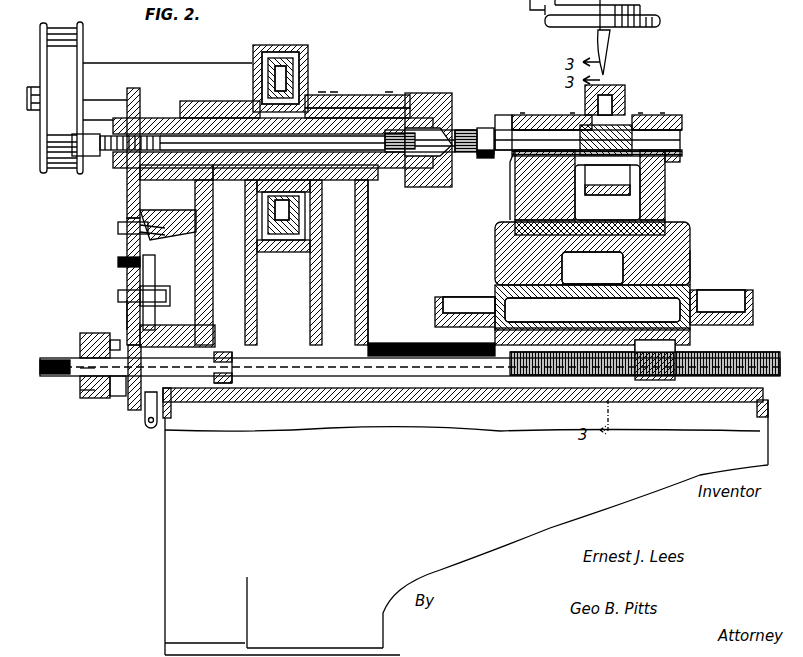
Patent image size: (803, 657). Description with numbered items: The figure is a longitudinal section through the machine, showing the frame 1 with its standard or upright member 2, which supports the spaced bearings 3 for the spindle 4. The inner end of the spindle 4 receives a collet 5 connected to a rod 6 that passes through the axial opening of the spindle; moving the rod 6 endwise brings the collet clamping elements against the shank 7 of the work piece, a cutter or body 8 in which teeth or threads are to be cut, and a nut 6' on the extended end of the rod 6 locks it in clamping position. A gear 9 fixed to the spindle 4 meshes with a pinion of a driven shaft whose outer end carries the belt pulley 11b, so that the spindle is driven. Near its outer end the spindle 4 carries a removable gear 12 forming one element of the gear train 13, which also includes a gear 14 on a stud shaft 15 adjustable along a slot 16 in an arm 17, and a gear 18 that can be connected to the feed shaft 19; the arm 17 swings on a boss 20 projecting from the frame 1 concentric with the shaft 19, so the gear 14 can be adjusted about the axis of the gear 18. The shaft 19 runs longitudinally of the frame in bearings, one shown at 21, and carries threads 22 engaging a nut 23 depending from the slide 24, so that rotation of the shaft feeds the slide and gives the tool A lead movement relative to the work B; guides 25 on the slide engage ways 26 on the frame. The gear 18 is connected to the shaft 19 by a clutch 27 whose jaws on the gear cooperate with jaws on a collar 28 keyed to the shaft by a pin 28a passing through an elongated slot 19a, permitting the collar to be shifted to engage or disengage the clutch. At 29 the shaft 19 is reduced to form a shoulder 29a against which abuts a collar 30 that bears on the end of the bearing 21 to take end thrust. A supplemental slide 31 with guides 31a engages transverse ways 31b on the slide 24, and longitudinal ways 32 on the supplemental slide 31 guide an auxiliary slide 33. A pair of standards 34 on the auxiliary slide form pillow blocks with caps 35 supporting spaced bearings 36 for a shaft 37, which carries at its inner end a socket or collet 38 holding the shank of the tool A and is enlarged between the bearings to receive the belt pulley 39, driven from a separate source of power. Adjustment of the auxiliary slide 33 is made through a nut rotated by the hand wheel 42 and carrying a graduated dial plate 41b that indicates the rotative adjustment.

The frame 1 is at (456, 398).
The standard or upright member 2 is at (368, 286).
The bearings 3 is at (343, 95).
The spindle 4 is at (326, 160).
The collet 5 is at (212, 101).
The rod 6 is at (259, 242).
The nut 6' is at (228, 161).
The shank 7 is at (420, 141).
The cutter or body 8 is at (466, 153).
The gear 9 is at (288, 83).
The pulley 11b is at (62, 33).
The removable gear 12 is at (133, 88).
The gear train 13 is at (150, 243).
The gear 14 is at (127, 316).
The stud shaft 15 is at (160, 290).
The slot 16 is at (152, 316).
The arm 17 is at (150, 430).
The gear 18 is at (135, 410).
The shaft 19 is at (410, 367).
The elongated slot 19a is at (105, 345).
The boss 20 is at (465, 405).
The bearing 21 is at (208, 334).
The threads 22 is at (578, 376).
The nut 23 is at (650, 385).
The slide 24 is at (620, 330).
The guides 25 is at (495, 334).
The ways 26 is at (412, 343).
The clutch 27 is at (118, 396).
The collar 28 is at (90, 398).
The pin 28a is at (92, 372).
The reduced portion 29 is at (208, 352).
The shoulder 29a is at (232, 358).
The collar 30 is at (224, 385).
The supplemental slide 31 is at (682, 245).
The guides 31a is at (682, 268).
The ways 31b is at (610, 278).
The ways 32 is at (680, 226).
The auxiliary slide 33 is at (662, 206).
The standards 34 is at (540, 186).
The caps 35 is at (535, 115).
The bearings 36 is at (555, 115).
The shaft 37 is at (680, 141).
The socket or collet 38 is at (503, 115).
The driving element 39 is at (612, 88).
The dial plate 41b is at (655, 10).
The hand wheel 42 is at (655, 25).
The tool A is at (483, 157).
The work B is at (465, 128).